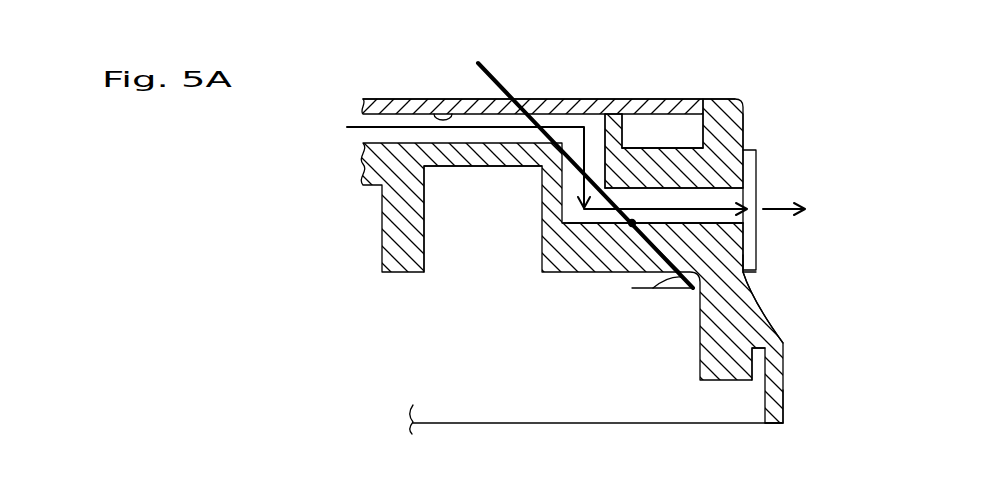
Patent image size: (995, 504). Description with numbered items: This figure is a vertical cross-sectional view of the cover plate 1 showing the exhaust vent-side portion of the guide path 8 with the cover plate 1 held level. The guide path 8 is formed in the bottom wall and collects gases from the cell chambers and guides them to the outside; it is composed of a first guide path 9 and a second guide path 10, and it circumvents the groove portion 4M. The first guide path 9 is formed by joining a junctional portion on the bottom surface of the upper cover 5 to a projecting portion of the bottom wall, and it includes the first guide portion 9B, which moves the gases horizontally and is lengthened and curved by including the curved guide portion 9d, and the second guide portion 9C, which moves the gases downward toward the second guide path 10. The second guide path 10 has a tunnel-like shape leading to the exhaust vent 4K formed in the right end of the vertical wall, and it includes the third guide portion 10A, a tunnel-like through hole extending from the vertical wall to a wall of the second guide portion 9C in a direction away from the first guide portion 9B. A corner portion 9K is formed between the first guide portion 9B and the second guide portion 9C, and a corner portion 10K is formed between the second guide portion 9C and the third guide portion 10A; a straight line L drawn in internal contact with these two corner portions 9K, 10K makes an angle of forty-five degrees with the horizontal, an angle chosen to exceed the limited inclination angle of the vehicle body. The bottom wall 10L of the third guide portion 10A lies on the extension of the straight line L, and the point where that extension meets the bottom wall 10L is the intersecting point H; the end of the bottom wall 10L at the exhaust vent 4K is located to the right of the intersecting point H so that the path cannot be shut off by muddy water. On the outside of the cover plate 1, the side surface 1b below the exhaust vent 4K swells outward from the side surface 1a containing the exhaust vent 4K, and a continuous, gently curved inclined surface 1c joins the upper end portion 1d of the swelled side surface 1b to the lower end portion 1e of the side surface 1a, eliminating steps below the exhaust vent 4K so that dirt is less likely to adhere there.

The cover plate 1 is at (758, 320).
The nozzle N is at (632, 283).
The side surface 1a is at (745, 132).
The side surface 1b is at (783, 390).
The inclined surface 1c is at (758, 299).
The upper end portion 1d is at (781, 345).
The lower end portion 1e is at (747, 272).
The exhaust vent 4K is at (750, 225).
The groove portion 4M is at (687, 147).
The upper cover 5 is at (593, 98).
The guide path 8 is at (620, 113).
The first guide path 9 is at (600, 148).
The first guide portion 9B is at (429, 69).
The curved guide portion 9d is at (440, 110).
The corner portion 9K is at (540, 167).
The second guide portion 9C is at (578, 225).
The second guide path 10 is at (745, 173).
The corner portion 10K is at (633, 158).
The third guide portion 10A is at (670, 198).
The bottom wall 10L is at (603, 213).
The straight line L is at (510, 92).
The intersecting point H is at (629, 228).